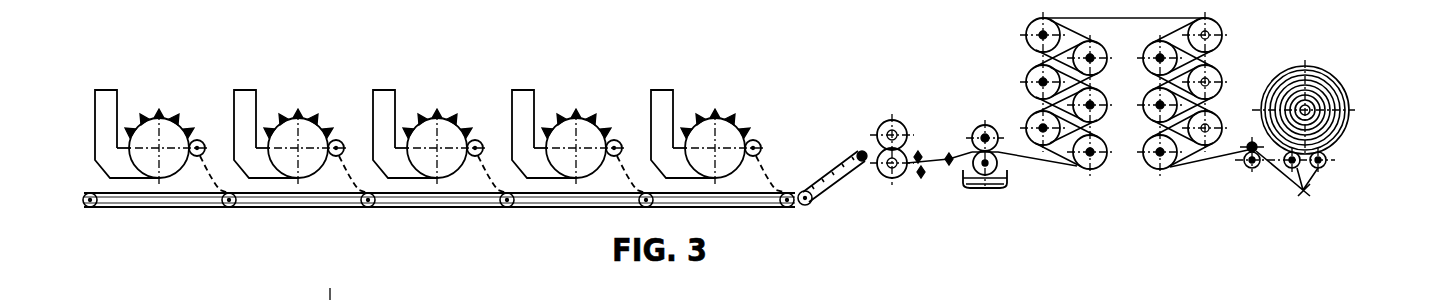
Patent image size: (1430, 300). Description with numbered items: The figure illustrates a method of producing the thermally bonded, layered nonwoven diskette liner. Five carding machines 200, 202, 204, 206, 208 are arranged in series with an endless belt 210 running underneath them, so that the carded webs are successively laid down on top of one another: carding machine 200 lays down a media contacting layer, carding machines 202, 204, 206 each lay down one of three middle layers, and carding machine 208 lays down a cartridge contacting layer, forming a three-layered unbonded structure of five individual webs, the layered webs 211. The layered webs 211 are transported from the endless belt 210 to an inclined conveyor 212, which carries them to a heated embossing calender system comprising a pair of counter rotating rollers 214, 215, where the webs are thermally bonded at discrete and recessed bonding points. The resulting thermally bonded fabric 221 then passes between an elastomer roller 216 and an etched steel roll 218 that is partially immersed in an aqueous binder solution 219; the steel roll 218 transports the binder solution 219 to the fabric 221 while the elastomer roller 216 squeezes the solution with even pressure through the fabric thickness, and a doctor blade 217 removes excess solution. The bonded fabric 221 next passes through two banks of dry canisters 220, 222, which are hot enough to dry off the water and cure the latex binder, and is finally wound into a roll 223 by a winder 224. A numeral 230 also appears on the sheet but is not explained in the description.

The carding machine 200 is at (120, 106).
The carding machine 202 is at (259, 106).
The carding machine 204 is at (398, 106).
The carding machine 206 is at (537, 106).
The carding machine 208 is at (676, 106).
The endless belt 210 is at (455, 208).
The layered webs 211 is at (828, 170).
The inclined conveyor 212 is at (827, 202).
The counter rotating roller 214 is at (885, 123).
The counter rotating roller 215 is at (878, 178).
The elastomer roller 216 is at (993, 124).
The doctor blade 217 is at (955, 166).
The etched steel roll 218 is at (1005, 176).
The binder solution 219 is at (986, 188).
The bank of dry canisters 220 is at (1040, 26).
The thermally bonded fabric 221 is at (930, 160).
The bank of dry canisters 222 is at (1222, 27).
The roll 223 is at (1342, 88).
The winder 224 is at (1312, 113).
The apparatus 230 is at (1159, 290).